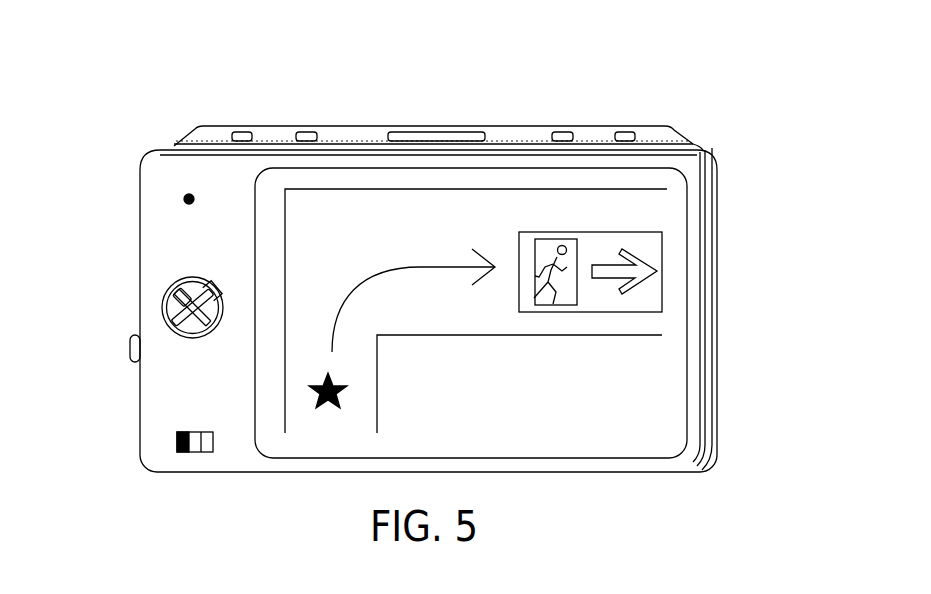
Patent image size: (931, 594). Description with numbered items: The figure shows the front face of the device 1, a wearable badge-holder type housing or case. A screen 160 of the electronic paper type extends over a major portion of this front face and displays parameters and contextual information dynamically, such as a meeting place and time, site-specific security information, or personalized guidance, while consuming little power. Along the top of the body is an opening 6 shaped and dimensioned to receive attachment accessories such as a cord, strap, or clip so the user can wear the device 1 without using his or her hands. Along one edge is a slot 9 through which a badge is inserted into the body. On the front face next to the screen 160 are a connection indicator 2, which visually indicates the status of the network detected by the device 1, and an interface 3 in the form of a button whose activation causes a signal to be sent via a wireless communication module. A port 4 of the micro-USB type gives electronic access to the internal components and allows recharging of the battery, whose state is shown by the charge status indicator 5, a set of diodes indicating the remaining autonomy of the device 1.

The device 1 is at (402, 104).
The connection indicator 2 is at (183, 192).
The interface 3 is at (167, 278).
The port 4 is at (127, 342).
The charge status indicator 5 is at (180, 462).
The opening 6 is at (462, 131).
The slot 9 is at (714, 370).
The screen 160 is at (677, 196).